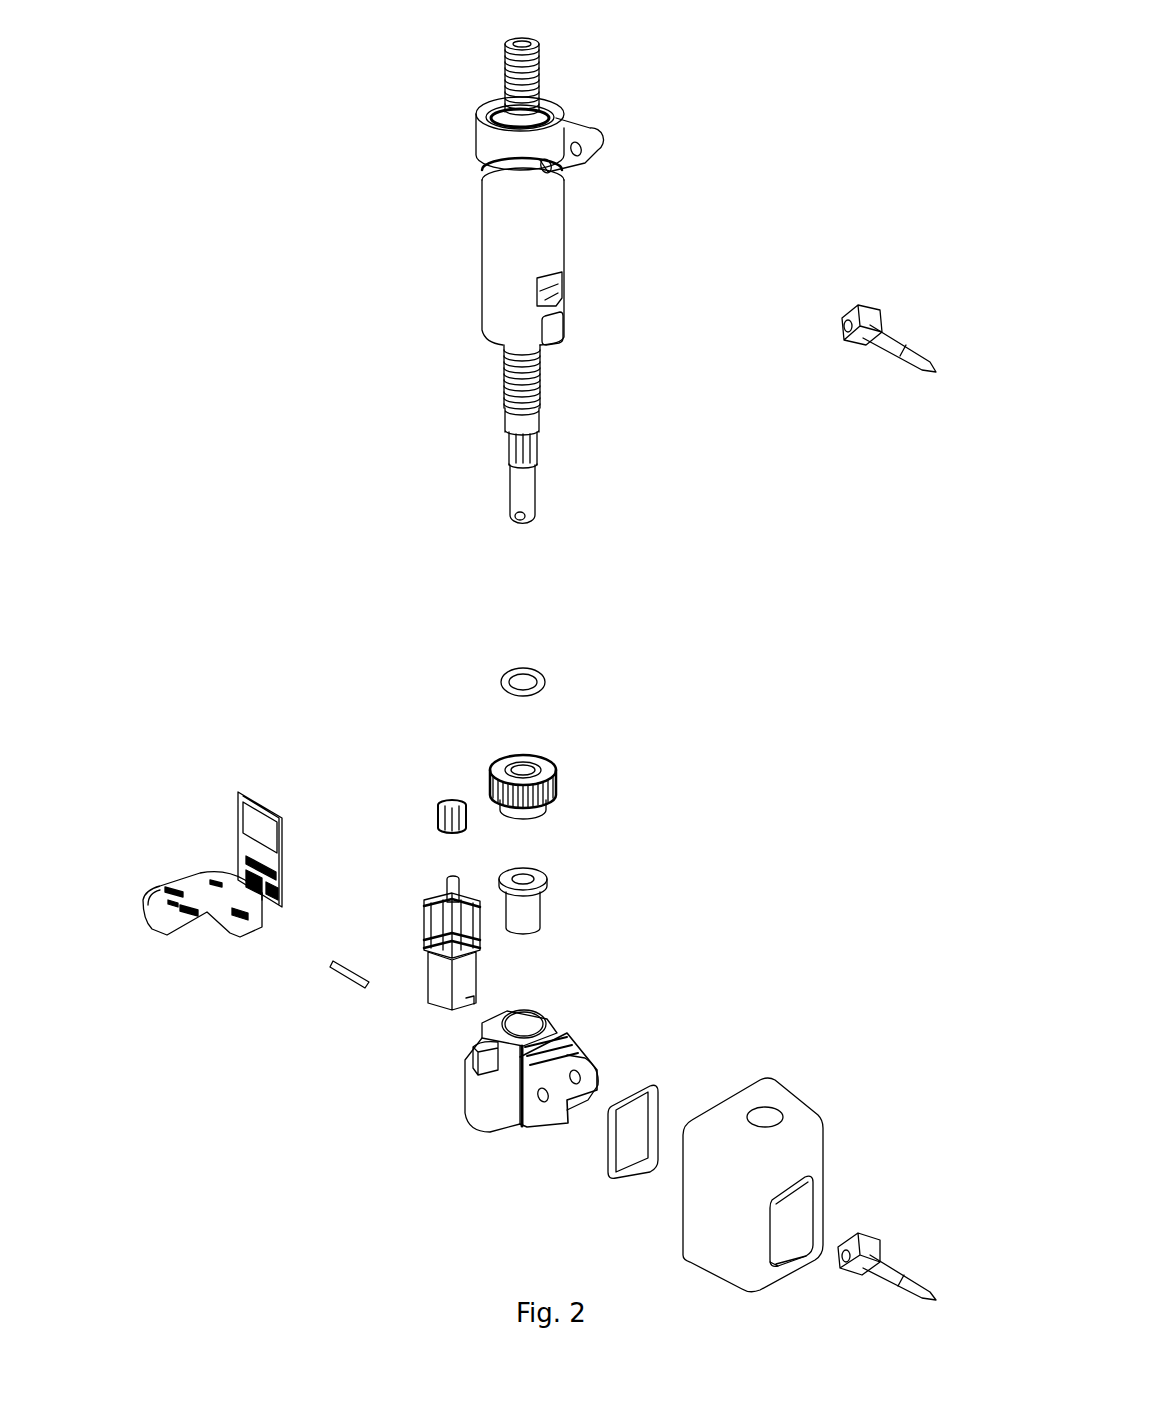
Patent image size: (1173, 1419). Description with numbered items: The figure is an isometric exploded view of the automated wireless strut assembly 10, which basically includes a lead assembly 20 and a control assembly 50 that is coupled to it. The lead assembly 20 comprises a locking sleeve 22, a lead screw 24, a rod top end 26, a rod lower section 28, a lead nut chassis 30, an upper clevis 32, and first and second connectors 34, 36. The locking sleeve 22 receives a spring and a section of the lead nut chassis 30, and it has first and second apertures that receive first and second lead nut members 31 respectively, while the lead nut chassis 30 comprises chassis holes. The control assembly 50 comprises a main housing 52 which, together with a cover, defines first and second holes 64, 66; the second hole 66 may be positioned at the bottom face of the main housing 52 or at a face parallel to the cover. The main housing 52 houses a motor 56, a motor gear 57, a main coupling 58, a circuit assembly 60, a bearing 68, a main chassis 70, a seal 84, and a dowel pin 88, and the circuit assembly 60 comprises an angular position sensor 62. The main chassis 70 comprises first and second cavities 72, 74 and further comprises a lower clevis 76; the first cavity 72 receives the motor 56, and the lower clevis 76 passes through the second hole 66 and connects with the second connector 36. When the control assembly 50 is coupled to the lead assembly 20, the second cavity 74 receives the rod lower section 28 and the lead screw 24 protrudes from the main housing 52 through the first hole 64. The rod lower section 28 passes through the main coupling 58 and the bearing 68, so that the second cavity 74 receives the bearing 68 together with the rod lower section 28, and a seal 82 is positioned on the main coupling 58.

The strut assembly 10 is at (100, 98).
The lead assembly 20 is at (272, 322).
The locking sleeve 22 is at (495, 282).
The lead screw 24 is at (498, 392).
The rod top end 26 is at (518, 42).
The rod lower section 28 is at (527, 483).
The lead nut chassis 30 is at (498, 110).
The lead nut member 31 is at (555, 330).
The upper clevis 32 is at (582, 130).
The first connector 34 is at (887, 333).
The second connector 36 is at (893, 1268).
The control assembly 50 is at (319, 608).
The main housing 52 is at (695, 1245).
The motor 56 is at (440, 893).
The motor gear 57 is at (453, 797).
The main coupling 58 is at (545, 755).
The circuit assembly 60 is at (214, 873).
The angular position sensor 62 is at (233, 923).
The first hole 64 is at (767, 1112).
The second hole 66 is at (795, 1210).
The bearing 68 is at (543, 873).
The main chassis 70 is at (475, 1090).
The first cavity 72 is at (470, 1052).
The second cavity 74 is at (523, 1015).
The lower clevis 76 is at (578, 1055).
The seal 82 is at (525, 668).
The seal 84 is at (652, 1092).
The dowel pin 88 is at (340, 968).